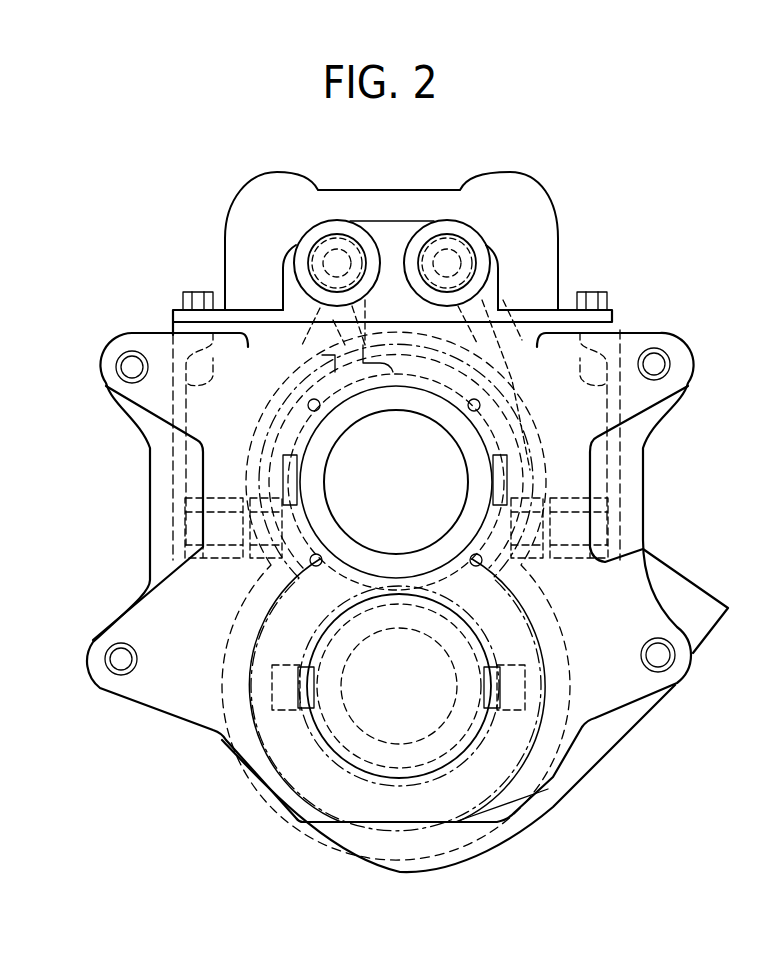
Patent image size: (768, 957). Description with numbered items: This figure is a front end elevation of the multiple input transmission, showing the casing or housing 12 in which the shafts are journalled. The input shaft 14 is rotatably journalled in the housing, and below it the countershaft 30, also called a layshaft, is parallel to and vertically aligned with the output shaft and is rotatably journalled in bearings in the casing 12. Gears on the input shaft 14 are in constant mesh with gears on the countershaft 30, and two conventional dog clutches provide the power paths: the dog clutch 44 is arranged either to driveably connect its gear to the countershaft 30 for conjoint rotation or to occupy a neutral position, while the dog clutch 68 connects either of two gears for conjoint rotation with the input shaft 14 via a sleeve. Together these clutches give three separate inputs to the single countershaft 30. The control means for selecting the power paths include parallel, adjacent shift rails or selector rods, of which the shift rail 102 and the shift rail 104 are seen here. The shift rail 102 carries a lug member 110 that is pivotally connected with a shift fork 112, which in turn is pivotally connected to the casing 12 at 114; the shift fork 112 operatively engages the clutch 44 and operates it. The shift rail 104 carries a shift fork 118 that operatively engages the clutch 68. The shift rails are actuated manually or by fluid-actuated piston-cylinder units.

The casing 12 is at (172, 703).
The input shaft 14 is at (388, 487).
The countershaft 30 is at (408, 689).
The dog clutch 44 is at (548, 789).
The dog clutch 68 is at (290, 547).
The shift rail 102 is at (336, 262).
The shift rail 104 is at (447, 258).
The lug member 110 is at (320, 308).
The shift fork 112 is at (343, 432).
The pivotal connection 114 is at (592, 508).
The shift fork 118 is at (503, 300).